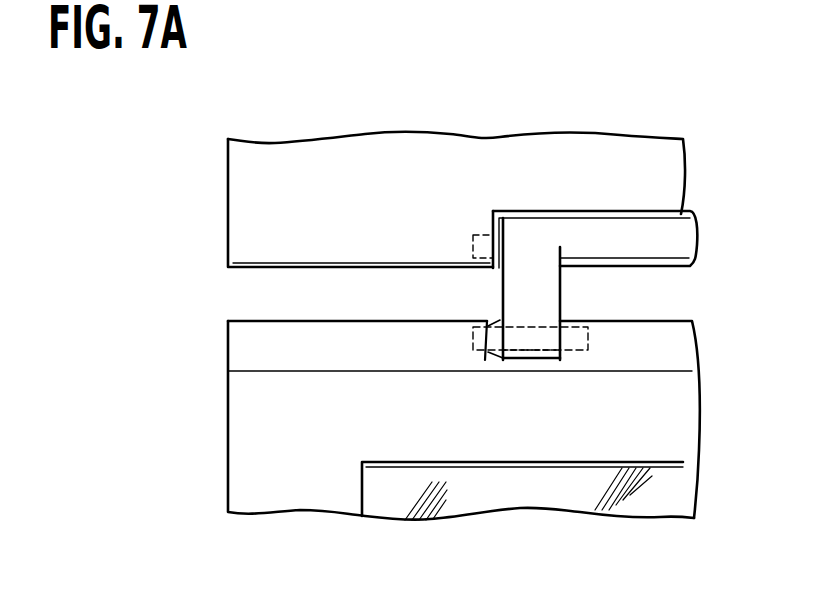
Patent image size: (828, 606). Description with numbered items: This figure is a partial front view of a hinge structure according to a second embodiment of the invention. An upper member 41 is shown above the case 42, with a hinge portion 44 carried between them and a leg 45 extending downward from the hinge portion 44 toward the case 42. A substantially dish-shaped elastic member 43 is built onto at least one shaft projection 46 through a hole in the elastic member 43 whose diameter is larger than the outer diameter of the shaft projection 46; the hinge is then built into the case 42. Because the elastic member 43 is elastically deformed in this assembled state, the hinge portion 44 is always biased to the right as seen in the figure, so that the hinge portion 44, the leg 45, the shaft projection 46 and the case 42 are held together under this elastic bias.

The upper substrate 41 is at (250, 212).
The case 42 is at (258, 407).
The elastic member 43 is at (493, 340).
The hinge portion 44 is at (616, 232).
The leg portion 45 is at (543, 296).
The shaft projection 46 is at (470, 333).